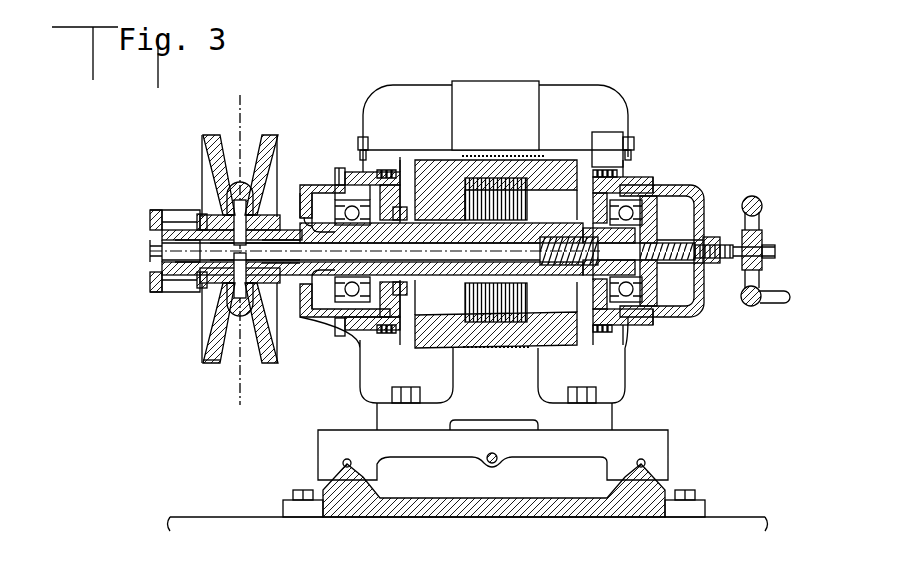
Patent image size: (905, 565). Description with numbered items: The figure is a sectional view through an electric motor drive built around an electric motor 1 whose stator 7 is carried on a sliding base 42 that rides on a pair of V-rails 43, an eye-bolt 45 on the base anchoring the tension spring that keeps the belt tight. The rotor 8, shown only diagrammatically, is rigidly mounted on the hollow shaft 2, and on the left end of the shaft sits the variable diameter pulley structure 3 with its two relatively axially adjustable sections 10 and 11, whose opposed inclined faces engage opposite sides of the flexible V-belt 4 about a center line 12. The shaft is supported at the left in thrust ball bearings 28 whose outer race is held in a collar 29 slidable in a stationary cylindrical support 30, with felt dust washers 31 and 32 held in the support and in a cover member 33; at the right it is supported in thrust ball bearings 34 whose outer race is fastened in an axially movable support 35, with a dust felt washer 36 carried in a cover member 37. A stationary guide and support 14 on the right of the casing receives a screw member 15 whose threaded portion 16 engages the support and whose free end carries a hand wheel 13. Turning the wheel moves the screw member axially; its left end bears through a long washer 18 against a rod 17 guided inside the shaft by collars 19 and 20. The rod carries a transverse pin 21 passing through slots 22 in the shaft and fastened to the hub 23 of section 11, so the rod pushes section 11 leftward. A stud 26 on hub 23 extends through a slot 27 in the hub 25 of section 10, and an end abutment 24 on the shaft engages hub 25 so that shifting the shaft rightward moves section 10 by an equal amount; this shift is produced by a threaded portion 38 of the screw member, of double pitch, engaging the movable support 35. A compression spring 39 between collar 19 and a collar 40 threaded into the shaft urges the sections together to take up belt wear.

The electric motor 1 is at (503, 117).
The shaft 2 is at (150, 262).
The variable diameter pulley structure 3 is at (213, 362).
The flexible V-belt 4 is at (232, 195).
The stator 7 is at (556, 96).
The rotor 8 is at (548, 170).
The pulley section 10 is at (207, 172).
The pulley section 11 is at (270, 163).
The center line 12 is at (242, 100).
The hand wheel 13 is at (764, 206).
The stationary guide and support 14 is at (680, 190).
The screw member 15 is at (754, 248).
The threaded portion 16 is at (713, 272).
The rod 17 is at (651, 268).
The long washer 18 is at (657, 240).
The collar 19 is at (540, 230).
The collar 20 is at (276, 286).
The transverse pin 21 is at (218, 274).
The slots 22 is at (192, 278).
The hub 23 is at (212, 240).
The end abutment 24 is at (150, 215).
The hub 25 is at (150, 285).
The stud 26 is at (203, 212).
The slot 27 is at (160, 200).
The thrust ball bearings 28 is at (338, 312).
The collar 29 is at (342, 186).
The stationary cylindrical support 30 is at (312, 187).
The felt dust washer 31 is at (301, 218).
The felt dust washer 32 is at (406, 216).
The cover member 33 is at (402, 163).
The thrust ball bearings 34 is at (632, 195).
The axially movable support 35 is at (662, 313).
The dust felt washer 36 is at (586, 288).
The cover member 37 is at (600, 200).
The threaded portion 38 is at (686, 237).
The compression spring 39 is at (530, 284).
The collar 40 is at (615, 340).
The sliding base 42 is at (668, 441).
The V-rails 43 is at (352, 498).
The eye-bolt 45 is at (500, 457).